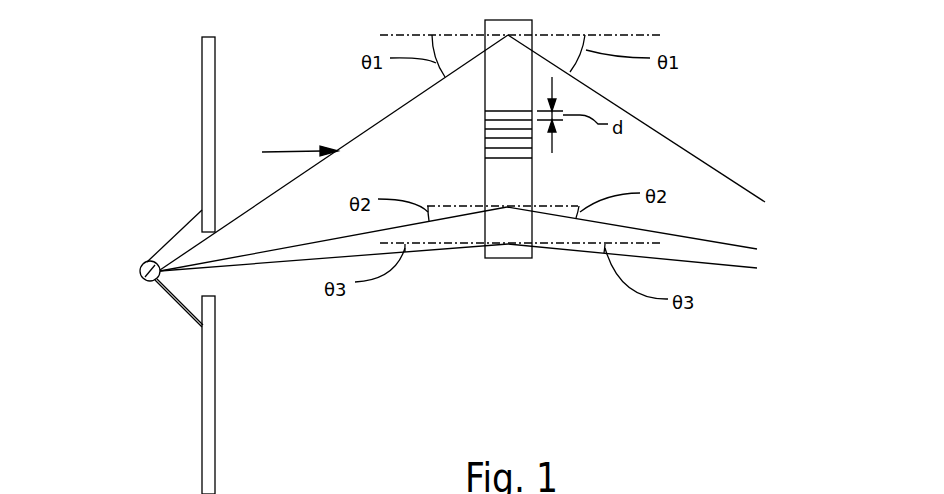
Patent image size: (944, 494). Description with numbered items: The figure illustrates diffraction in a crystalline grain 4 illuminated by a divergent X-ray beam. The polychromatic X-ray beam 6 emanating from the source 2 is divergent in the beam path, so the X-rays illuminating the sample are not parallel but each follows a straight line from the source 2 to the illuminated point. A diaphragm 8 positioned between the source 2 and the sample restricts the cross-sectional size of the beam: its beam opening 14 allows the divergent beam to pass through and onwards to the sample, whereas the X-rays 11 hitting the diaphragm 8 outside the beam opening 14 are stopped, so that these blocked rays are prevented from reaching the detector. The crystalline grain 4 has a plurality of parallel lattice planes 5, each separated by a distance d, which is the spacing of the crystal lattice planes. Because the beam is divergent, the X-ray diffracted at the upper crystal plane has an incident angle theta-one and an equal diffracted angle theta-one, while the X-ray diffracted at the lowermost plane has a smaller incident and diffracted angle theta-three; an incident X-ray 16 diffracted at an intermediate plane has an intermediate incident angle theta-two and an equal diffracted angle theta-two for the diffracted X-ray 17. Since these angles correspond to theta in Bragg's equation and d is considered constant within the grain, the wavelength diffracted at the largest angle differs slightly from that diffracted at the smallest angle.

The source 2 is at (140, 283).
The crystalline grain 4 is at (522, 258).
The parallel lattice planes 5 is at (503, 158).
The polychromatic X-ray beam 6 is at (289, 156).
The diaphragm 8 is at (205, 80).
The X-rays hitting the diaphragm 11 is at (200, 213).
The beam opening 14 is at (210, 281).
The incident X-ray 16 is at (390, 114).
The diffracted X-ray 17 is at (647, 125).